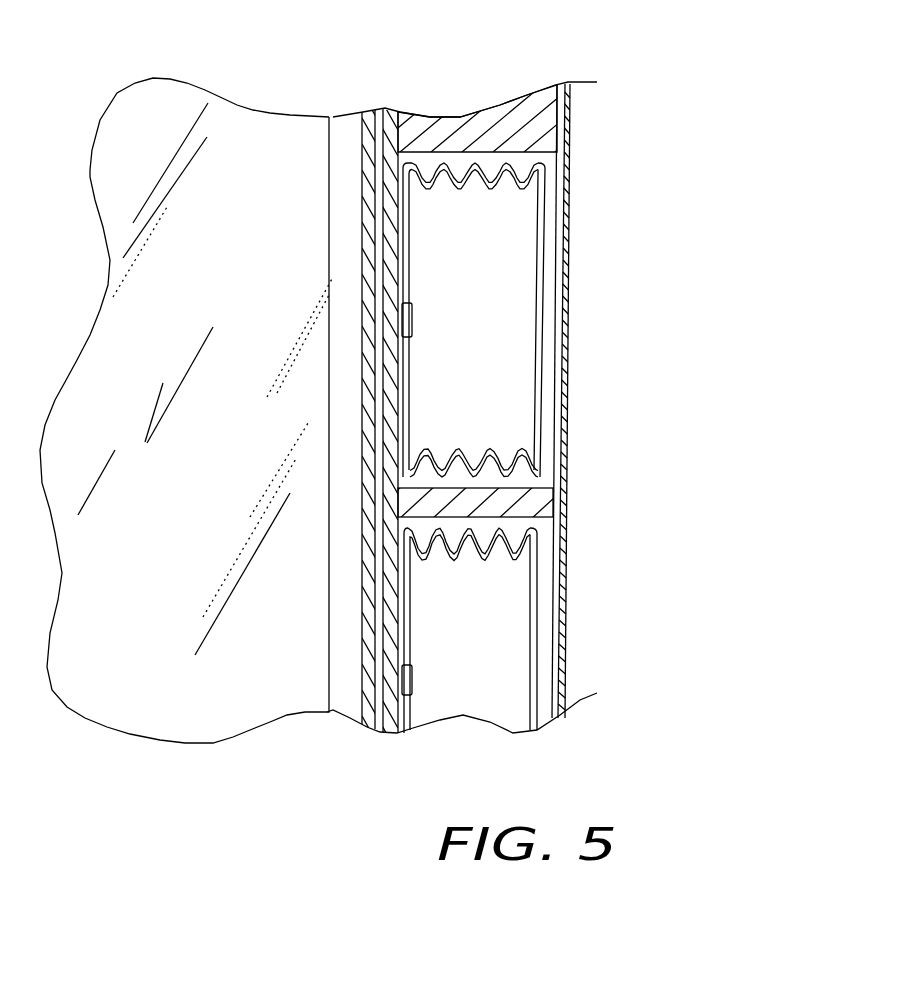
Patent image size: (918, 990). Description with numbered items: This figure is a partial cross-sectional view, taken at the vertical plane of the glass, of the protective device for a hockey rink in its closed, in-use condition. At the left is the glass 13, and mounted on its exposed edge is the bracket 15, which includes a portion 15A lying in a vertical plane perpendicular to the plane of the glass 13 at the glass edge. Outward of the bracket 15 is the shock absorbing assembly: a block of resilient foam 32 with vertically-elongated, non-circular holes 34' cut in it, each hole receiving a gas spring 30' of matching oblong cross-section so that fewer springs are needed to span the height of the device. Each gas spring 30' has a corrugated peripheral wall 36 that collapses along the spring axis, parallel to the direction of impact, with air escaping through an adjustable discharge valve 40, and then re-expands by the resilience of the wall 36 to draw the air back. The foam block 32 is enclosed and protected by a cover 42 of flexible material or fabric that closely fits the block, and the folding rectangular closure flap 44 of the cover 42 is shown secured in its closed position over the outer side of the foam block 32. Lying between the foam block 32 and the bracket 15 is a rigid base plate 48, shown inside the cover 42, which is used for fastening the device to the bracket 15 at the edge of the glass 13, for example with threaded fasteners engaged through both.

The glass 13 is at (240, 285).
The bracket 15 is at (330, 410).
The portion of the bracket 15A is at (370, 205).
The cover 42 is at (378, 145).
The foam block 32 is at (545, 120).
The closure flap 44 is at (568, 150).
The corrugated peripheral wall 36 is at (463, 167).
The gas springs 30' is at (516, 280).
The holes 34' is at (516, 474).
The adjustable discharge valve 40 is at (412, 325).
The rigid base plate 48 is at (390, 598).